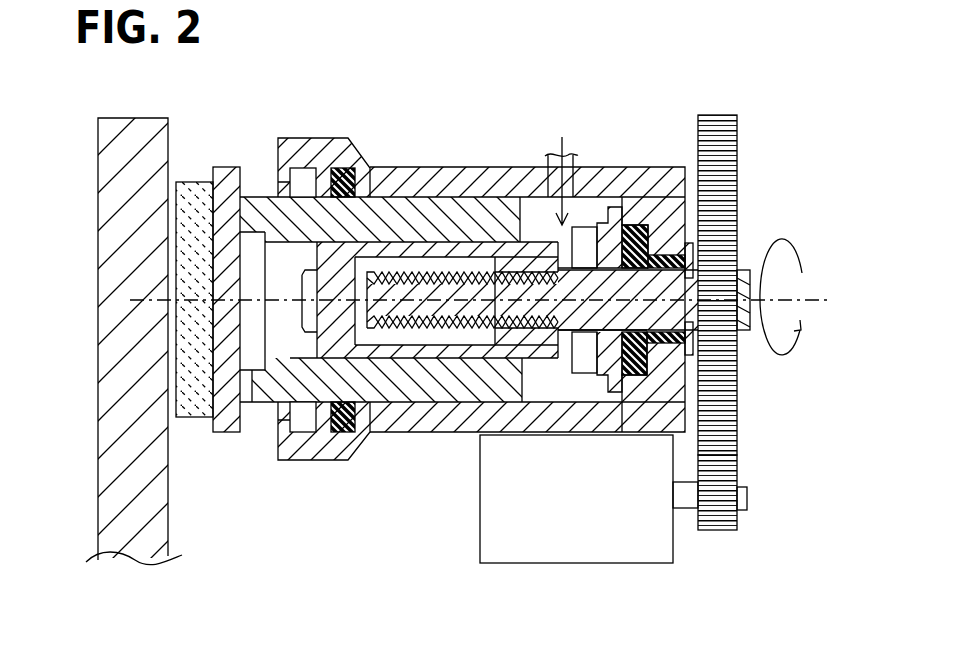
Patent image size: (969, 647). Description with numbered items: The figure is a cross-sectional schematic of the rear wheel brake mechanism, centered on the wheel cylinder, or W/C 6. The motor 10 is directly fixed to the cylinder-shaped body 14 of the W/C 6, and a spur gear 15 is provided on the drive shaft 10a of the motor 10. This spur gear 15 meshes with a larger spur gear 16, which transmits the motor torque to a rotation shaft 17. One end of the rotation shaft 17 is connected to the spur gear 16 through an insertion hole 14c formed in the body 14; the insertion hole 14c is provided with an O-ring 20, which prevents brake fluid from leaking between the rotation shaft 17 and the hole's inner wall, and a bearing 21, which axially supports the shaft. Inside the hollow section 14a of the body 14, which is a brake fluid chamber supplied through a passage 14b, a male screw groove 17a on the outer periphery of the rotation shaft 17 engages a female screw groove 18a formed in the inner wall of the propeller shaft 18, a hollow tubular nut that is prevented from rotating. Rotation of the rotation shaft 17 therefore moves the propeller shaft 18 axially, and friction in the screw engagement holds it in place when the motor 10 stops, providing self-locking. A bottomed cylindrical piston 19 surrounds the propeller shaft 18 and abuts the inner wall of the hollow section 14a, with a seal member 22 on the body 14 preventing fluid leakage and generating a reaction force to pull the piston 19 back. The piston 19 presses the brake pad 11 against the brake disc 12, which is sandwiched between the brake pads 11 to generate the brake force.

The wheel cylinder 6 is at (458, 153).
The motor 10 is at (547, 564).
The drive shaft 10a is at (684, 503).
The brake pad 11 is at (194, 418).
The brake disc 12 is at (100, 383).
The body 14 is at (488, 167).
The hollow section 14a is at (538, 210).
The passage 14b is at (573, 165).
The insertion hole 14c is at (690, 282).
The spur gear 15 is at (740, 522).
The spur gear 16 is at (738, 153).
The rotation shaft 17 is at (591, 359).
The male screw groove 17a is at (477, 325).
The propeller shaft 18 is at (410, 348).
The female screw groove 18a is at (517, 335).
The piston 19 is at (367, 390).
The O-ring 20 is at (632, 363).
The bearing 21 is at (660, 347).
The seal member 22 is at (342, 432).